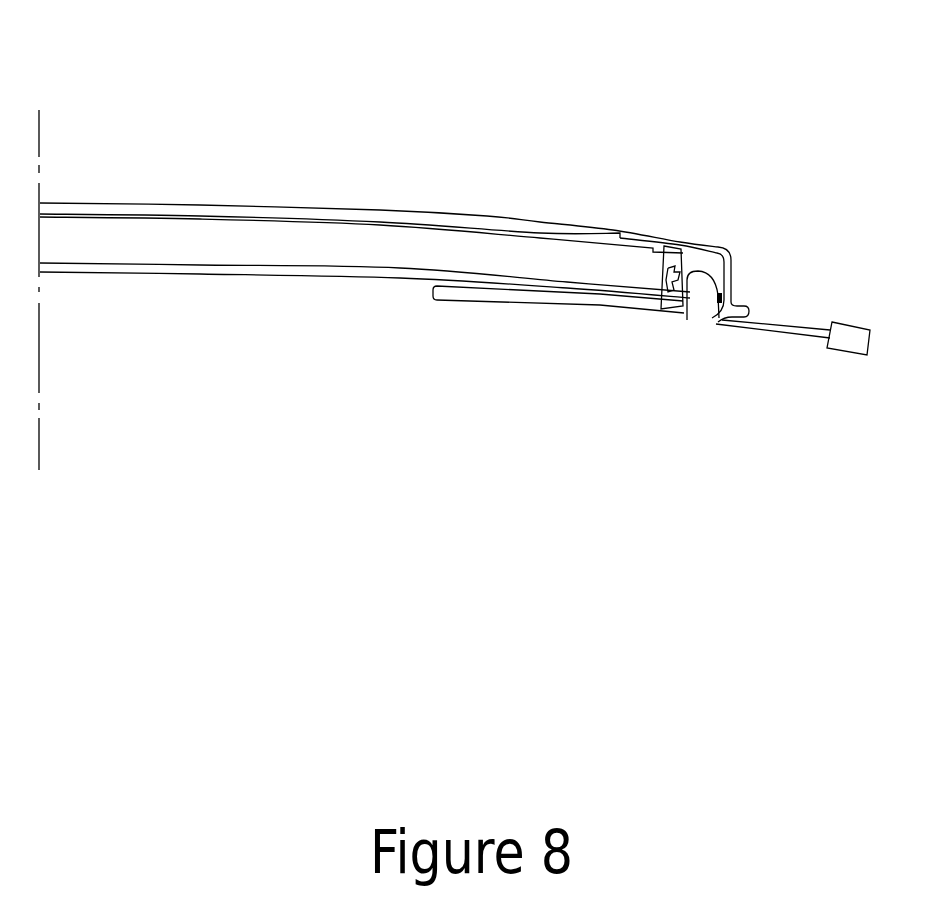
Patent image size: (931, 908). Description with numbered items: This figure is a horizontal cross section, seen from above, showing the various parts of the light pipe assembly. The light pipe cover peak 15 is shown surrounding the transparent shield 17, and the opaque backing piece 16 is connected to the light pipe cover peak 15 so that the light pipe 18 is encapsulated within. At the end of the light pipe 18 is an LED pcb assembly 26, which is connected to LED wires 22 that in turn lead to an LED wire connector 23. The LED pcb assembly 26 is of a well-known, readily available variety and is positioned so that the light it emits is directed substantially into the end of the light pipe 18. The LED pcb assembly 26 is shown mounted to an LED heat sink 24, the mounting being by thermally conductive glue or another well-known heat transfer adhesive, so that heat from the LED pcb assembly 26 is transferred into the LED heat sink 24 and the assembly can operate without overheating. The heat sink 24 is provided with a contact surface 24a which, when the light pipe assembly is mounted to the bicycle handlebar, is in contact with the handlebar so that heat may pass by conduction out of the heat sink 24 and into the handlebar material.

The light pipe cover peak 15 is at (697, 240).
The opaque backing piece 16 is at (288, 278).
The transparent shield 17 is at (487, 222).
The light pipe 18 is at (192, 247).
The LED wires 22 is at (763, 320).
The LED wire connectors 23 is at (842, 355).
The LED heat sink 24 is at (702, 307).
The contact surface 24a is at (469, 310).
The LED pcb assembly 26 is at (683, 279).